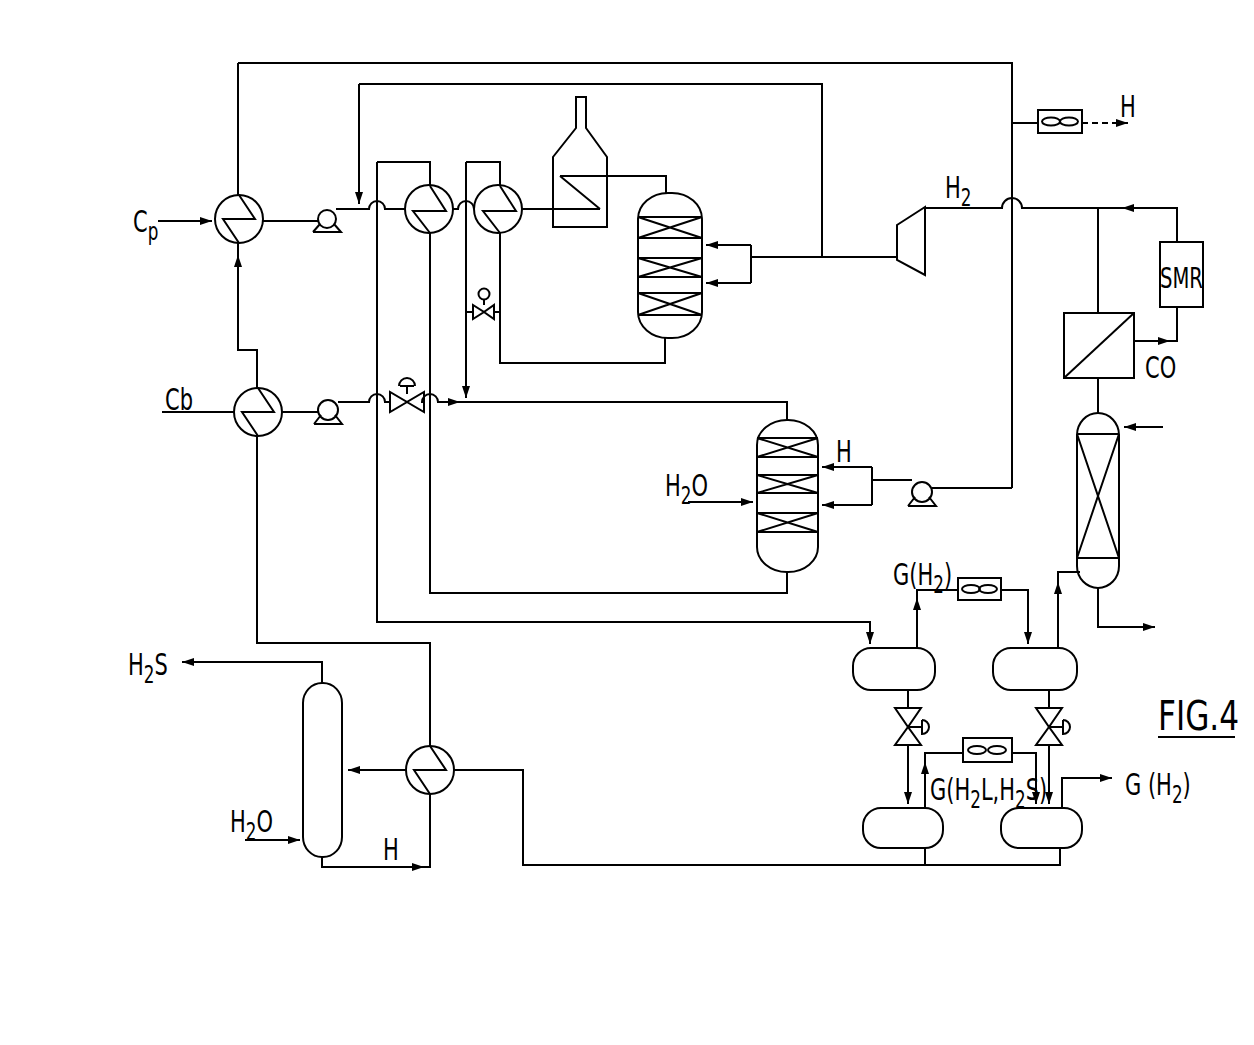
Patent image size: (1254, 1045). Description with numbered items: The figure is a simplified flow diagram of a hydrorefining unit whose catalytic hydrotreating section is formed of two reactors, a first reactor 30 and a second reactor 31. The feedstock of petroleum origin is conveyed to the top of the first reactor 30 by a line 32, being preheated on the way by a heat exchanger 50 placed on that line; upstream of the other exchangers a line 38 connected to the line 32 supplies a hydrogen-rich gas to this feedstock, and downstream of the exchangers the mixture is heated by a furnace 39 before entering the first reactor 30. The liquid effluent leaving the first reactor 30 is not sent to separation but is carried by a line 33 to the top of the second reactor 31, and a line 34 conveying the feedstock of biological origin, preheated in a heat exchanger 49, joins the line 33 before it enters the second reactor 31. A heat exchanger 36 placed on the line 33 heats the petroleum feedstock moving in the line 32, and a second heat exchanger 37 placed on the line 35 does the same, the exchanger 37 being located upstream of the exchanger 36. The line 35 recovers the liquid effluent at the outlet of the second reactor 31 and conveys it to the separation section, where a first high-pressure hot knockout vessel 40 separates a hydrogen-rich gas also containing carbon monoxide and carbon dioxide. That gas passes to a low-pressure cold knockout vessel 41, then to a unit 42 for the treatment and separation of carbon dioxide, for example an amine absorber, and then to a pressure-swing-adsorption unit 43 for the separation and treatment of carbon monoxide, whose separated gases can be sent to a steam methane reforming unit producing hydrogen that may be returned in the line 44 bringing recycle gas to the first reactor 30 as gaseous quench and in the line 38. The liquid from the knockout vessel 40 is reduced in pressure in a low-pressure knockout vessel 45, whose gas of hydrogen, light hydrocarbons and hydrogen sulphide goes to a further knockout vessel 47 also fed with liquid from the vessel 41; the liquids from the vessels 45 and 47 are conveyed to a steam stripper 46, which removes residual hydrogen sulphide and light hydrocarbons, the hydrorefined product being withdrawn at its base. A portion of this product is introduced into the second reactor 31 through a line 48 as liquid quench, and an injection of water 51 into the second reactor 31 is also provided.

The first reactor 30 is at (678, 205).
The second reactor 31 is at (810, 423).
The line 32 is at (283, 223).
The line 33 is at (612, 363).
The line 34 is at (577, 403).
The line 35 is at (465, 471).
The heat exchanger 36 is at (523, 216).
The second heat exchanger 37 is at (433, 186).
The line 38 is at (359, 125).
The furnace 39 is at (577, 155).
The first high-pressure hot knockout vessel 40 is at (860, 672).
The low-pressure cold knockout vessel 41 is at (1060, 673).
The unit for the treatment and separation of CO2 42 is at (1112, 509).
The unit for the separation and treatment of CO 43 is at (1064, 341).
The line 44 is at (852, 259).
The low-pressure knockout vessel 45 is at (875, 816).
The steam stripper 46 is at (300, 736).
The knockout vessel 47 is at (1065, 832).
The line 48 is at (1012, 378).
The heat exchanger 49 is at (240, 419).
The heat exchanger 50 is at (217, 229).
The injection of water 51 is at (742, 506).